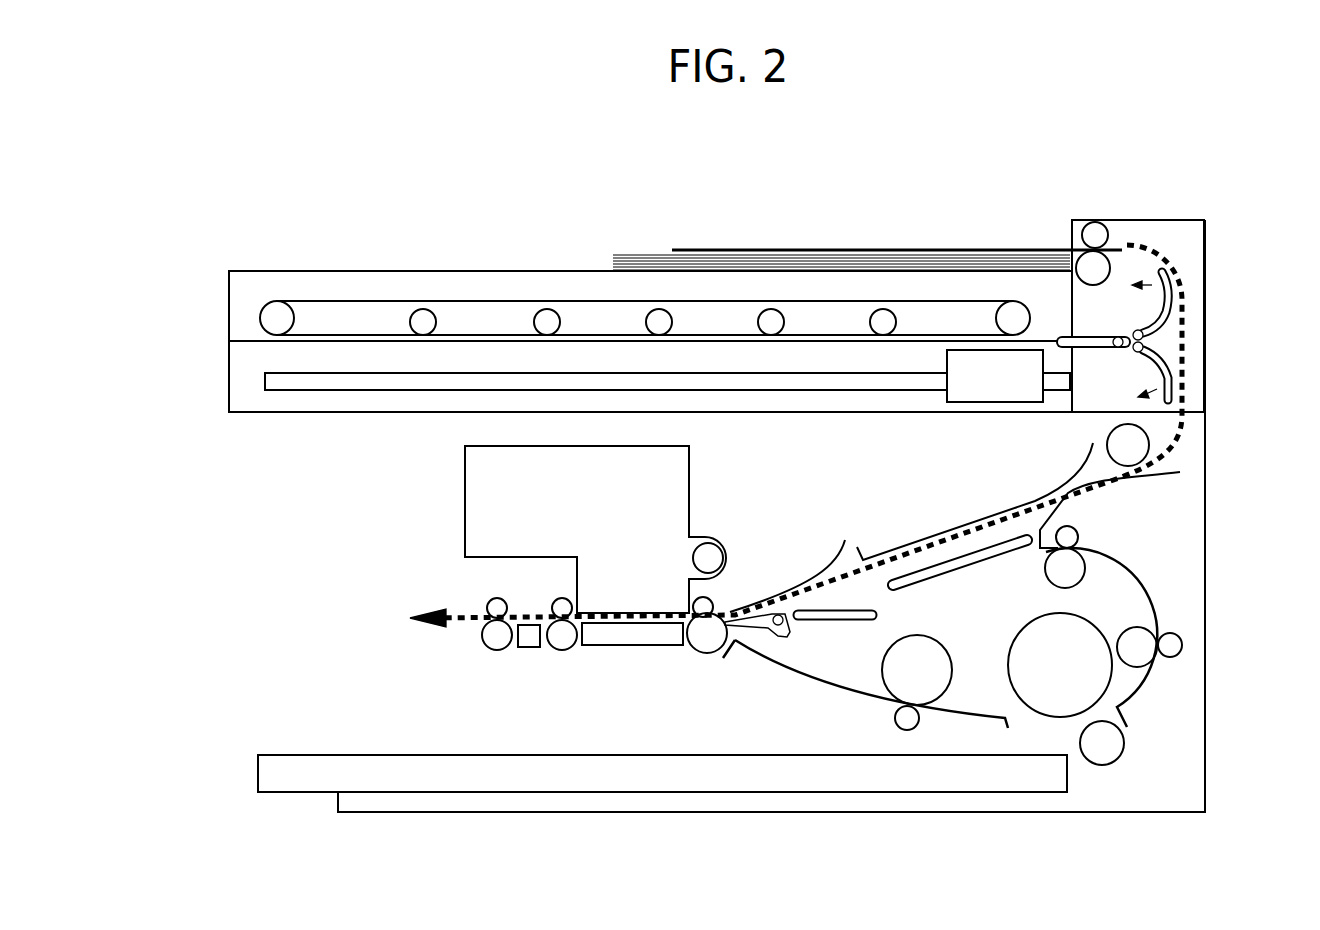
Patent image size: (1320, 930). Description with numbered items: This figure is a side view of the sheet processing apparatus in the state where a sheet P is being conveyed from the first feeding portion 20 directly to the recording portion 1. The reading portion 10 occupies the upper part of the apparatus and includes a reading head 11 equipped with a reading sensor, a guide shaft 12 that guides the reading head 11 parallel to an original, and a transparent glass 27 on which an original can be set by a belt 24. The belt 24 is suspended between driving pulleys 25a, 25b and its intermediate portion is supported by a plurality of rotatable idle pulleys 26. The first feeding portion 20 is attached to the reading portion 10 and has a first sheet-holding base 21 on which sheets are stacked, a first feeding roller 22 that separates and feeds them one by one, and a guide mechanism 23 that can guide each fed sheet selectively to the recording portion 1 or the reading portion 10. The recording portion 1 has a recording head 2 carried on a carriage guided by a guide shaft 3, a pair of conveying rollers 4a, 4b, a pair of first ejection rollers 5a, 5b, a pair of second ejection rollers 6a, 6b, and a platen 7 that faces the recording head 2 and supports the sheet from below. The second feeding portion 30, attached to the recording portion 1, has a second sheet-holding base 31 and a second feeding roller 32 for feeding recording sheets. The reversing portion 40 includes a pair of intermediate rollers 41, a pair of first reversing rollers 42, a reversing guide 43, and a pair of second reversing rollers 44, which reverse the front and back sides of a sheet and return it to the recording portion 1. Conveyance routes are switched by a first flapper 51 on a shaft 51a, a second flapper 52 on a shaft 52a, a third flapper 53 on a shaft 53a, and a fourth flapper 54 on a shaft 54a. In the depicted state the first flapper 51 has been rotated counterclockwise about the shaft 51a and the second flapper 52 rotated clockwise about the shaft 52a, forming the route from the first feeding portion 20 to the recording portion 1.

The recording portion 1 is at (340, 583).
The reading portion 10 is at (222, 376).
The reading head 11 is at (980, 360).
The guide shaft 12 is at (350, 384).
The first feeding portion 20 is at (1162, 210).
The first sheet-holding base 21 is at (600, 268).
The first feeding roller 22 is at (1098, 236).
The guide mechanism 23 is at (1176, 251).
The belt 24 is at (830, 300).
The driving pulley 25a is at (1005, 318).
The driving pulley 25b is at (278, 313).
The idle pulleys 26 is at (423, 320).
The transparent glass 27 is at (482, 340).
The document P is at (714, 248).
The recording head 2 is at (497, 500).
The guide shaft 3 is at (710, 556).
The conveying roller 4a is at (704, 642).
The conveying roller 4b is at (706, 603).
The first ejection roller 5a is at (563, 640).
The first ejection roller 5b is at (559, 604).
The second ejection roller 6a is at (498, 640).
The second ejection roller 6b is at (494, 604).
The platen 7 is at (628, 640).
The second feeding portion 30 is at (516, 806).
The second sheet-holding base 31 is at (632, 775).
The second feeding roller 32 is at (1050, 690).
The reversing portion 40 is at (1168, 563).
The intermediate rollers 41 is at (900, 686).
The first reversing rollers 42 is at (1140, 650).
The reversing guide 43 is at (1156, 597).
The second reversing rollers 44 is at (1053, 572).
The first flapper 51 is at (1178, 292).
The shaft 51a is at (1144, 333).
The second flapper 52 is at (1172, 385).
The shaft 52a is at (1148, 350).
The third flapper 53 is at (1067, 338).
The shaft 53a is at (1115, 348).
The fourth flapper 54 is at (760, 638).
The shaft 54a is at (784, 622).